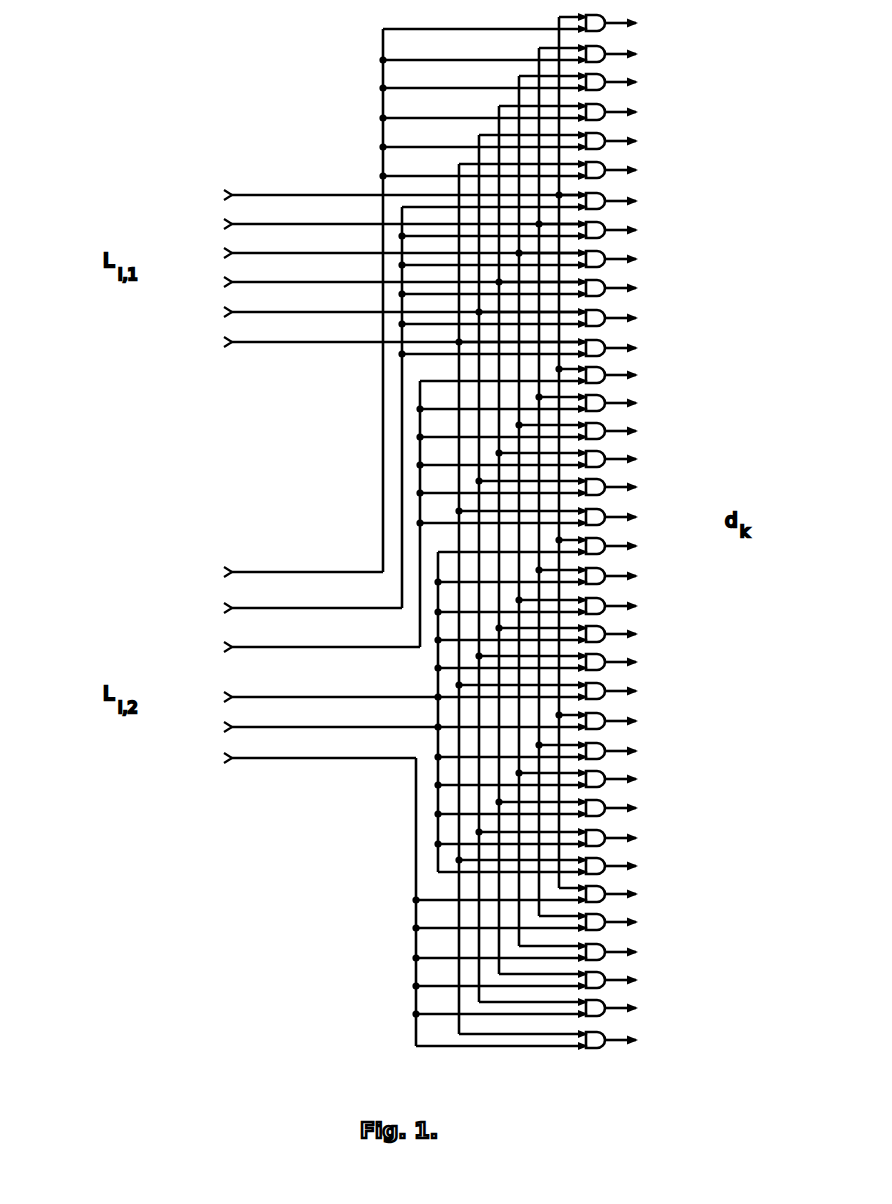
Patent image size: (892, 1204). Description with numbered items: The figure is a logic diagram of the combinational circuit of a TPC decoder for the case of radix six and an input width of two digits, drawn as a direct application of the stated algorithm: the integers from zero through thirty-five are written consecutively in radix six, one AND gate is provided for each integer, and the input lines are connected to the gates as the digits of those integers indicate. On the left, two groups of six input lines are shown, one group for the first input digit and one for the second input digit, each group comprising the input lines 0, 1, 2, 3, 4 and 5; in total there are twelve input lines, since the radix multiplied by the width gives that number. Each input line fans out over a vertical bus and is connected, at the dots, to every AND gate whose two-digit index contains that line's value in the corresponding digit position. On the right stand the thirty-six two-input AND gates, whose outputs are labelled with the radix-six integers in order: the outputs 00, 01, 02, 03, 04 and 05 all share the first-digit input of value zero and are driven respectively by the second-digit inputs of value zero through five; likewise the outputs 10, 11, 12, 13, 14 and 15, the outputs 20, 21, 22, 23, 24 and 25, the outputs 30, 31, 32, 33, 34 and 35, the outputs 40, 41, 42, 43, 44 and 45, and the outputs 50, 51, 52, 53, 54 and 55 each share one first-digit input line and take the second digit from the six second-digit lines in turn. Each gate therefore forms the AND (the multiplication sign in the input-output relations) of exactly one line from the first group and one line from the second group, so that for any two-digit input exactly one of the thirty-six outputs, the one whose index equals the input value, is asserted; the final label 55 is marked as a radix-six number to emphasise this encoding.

The input line 0 is at (383, 381).
The input line 1 is at (383, 412).
The input line 2 is at (383, 444).
The input line 3 is at (383, 485).
The input line 4 is at (383, 515).
The input line 5 is at (383, 547).
The AND gate output d00 00 is at (537, 23).
The AND gate output d01 01 is at (537, 54).
The AND gate output d02 02 is at (537, 82).
The AND gate output d03 03 is at (537, 112).
The AND gate output d04 04 is at (537, 141).
The AND gate output d05 05 is at (537, 170).
The AND gate output d10 10 is at (547, 201).
The AND gate output d11 11 is at (547, 230).
The AND gate output d12 12 is at (547, 259).
The AND gate output d13 13 is at (547, 288).
The AND gate output d14 14 is at (547, 318).
The AND gate output d15 15 is at (547, 348).
The AND gate output d20 20 is at (556, 375).
The AND gate output d21 21 is at (556, 403).
The AND gate output d22 22 is at (556, 431).
The AND gate output d23 23 is at (556, 459).
The AND gate output d24 24 is at (556, 487).
The AND gate output d25 25 is at (556, 517).
The AND gate output d30 30 is at (565, 546).
The AND gate output d31 31 is at (565, 576).
The AND gate output d32 32 is at (565, 606).
The AND gate output d33 33 is at (565, 634).
The AND gate output d34 34 is at (565, 662).
The AND gate output d35 35 is at (565, 691).
The AND gate output d40 40 is at (565, 721).
The AND gate output d41 41 is at (565, 751).
The AND gate output d42 42 is at (565, 779).
The AND gate output d43 43 is at (565, 808).
The AND gate output d44 44 is at (565, 838).
The AND gate output d45 45 is at (565, 866).
The AND gate output d50 50 is at (554, 894).
The AND gate output d51 51 is at (554, 922).
The AND gate output d52 52 is at (554, 952).
The AND gate output d53 53 is at (554, 980).
The AND gate output d54 54 is at (554, 1008).
The AND gate output d55 55 is at (563, 1044).